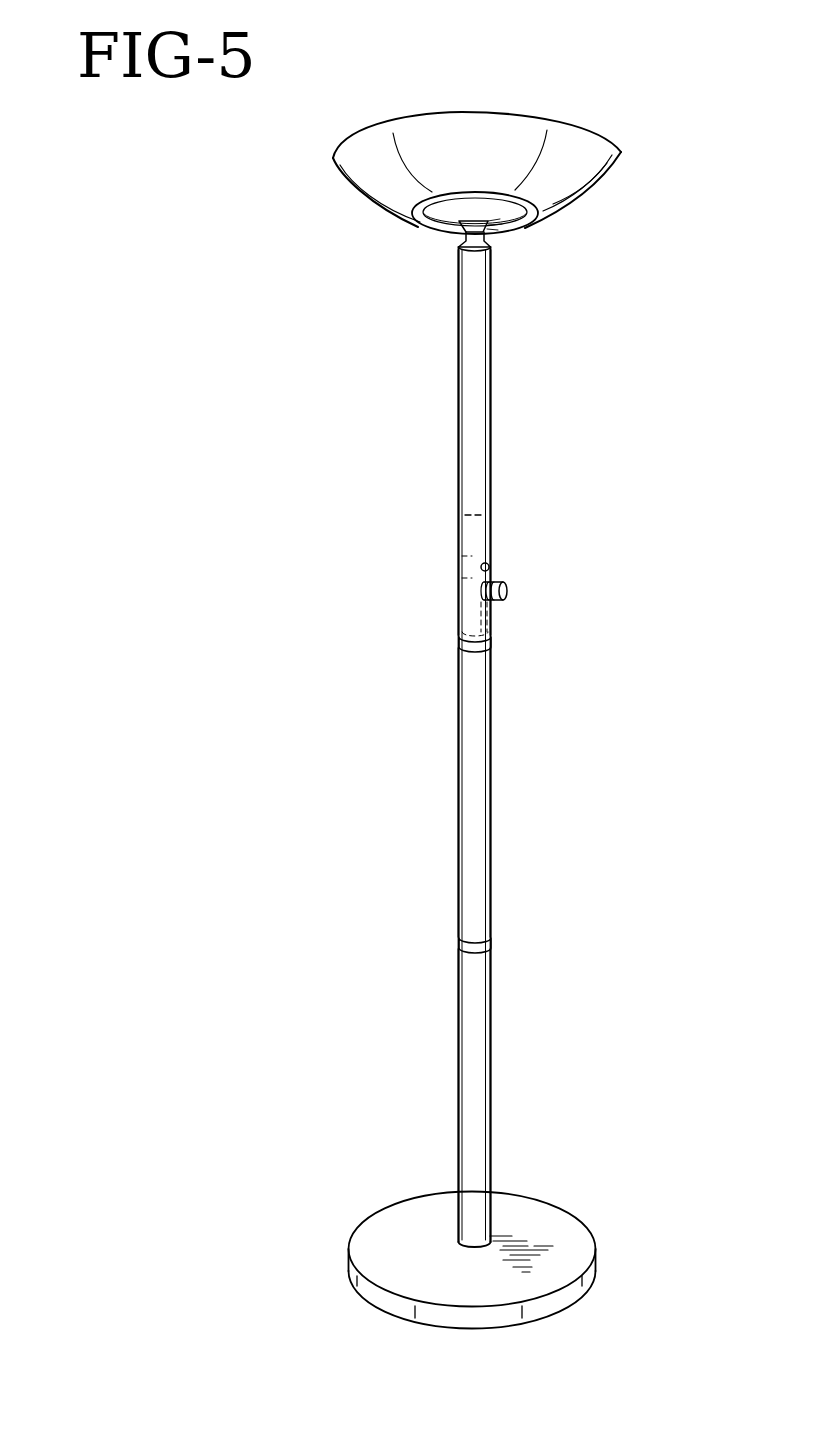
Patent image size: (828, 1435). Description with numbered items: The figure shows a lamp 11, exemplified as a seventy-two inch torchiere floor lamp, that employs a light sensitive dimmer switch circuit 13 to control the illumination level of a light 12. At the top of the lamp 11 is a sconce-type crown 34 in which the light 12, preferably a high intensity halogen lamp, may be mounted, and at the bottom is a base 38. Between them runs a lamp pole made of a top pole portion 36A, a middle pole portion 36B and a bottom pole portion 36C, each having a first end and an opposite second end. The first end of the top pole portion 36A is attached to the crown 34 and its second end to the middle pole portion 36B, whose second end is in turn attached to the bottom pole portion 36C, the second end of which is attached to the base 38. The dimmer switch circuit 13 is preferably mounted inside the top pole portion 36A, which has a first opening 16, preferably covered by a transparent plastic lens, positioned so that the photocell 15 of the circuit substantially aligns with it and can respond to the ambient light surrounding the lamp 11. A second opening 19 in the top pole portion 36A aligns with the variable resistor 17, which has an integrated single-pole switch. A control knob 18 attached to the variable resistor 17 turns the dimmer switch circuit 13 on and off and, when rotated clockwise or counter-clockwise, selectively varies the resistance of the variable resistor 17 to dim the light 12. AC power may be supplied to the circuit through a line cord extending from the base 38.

The lamp 11 is at (140, 1190).
The light 12 is at (535, 235).
The light sensitive dimmer switch circuit 13 is at (458, 527).
The photocell 15 is at (481, 566).
The first opening 16 is at (489, 562).
The variable resistor 17 is at (472, 592).
The control knob 18 is at (507, 592).
The second opening 19 is at (496, 632).
The crown 34 is at (613, 173).
The top pole portion 36A is at (490, 368).
The middle pole portion 36B is at (490, 798).
The bottom pole portion 36C is at (487, 1027).
The base 38 is at (595, 1262).